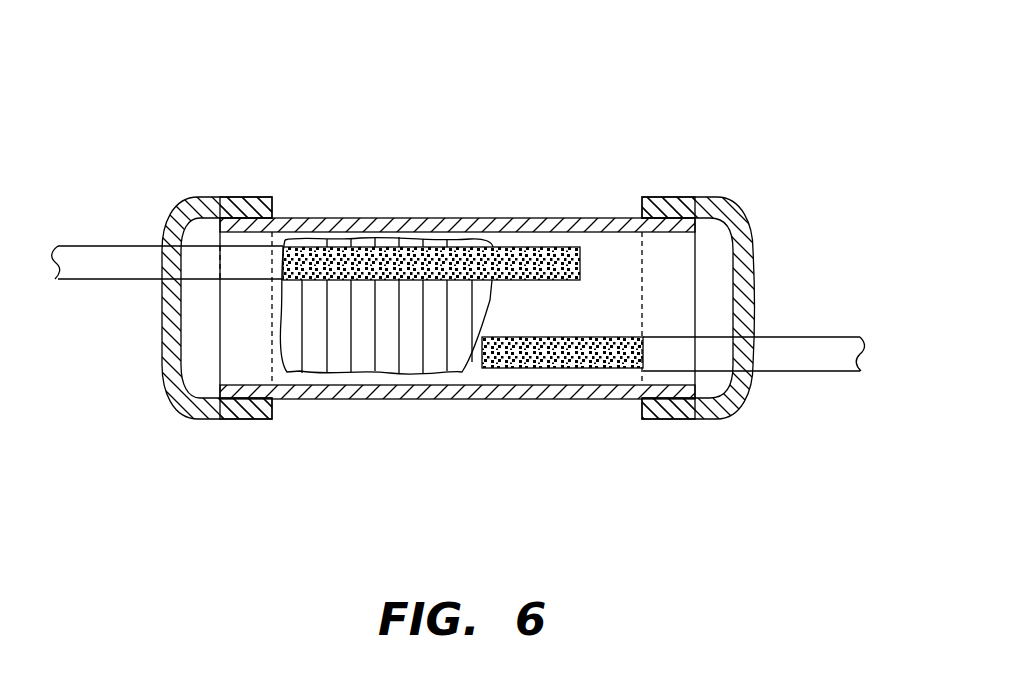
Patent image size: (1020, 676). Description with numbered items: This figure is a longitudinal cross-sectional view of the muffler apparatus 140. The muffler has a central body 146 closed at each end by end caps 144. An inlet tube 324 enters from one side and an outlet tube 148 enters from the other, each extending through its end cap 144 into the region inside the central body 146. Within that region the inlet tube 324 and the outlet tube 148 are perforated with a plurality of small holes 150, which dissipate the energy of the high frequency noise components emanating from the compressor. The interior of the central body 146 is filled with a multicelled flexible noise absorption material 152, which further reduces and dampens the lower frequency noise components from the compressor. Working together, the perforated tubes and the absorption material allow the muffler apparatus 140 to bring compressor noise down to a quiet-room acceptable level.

The muffler apparatus 140 is at (603, 146).
The end caps 144 is at (225, 410).
The central body 146 is at (357, 222).
The outlet tube 148 is at (802, 357).
The small holes 150 is at (517, 253).
The multicelled flexible noise absorption material 152 is at (363, 360).
The inlet tube 324 is at (112, 271).